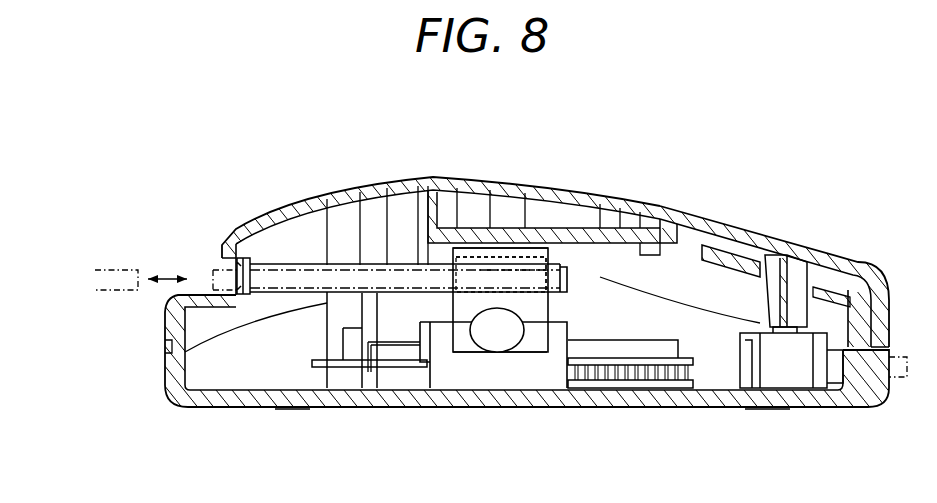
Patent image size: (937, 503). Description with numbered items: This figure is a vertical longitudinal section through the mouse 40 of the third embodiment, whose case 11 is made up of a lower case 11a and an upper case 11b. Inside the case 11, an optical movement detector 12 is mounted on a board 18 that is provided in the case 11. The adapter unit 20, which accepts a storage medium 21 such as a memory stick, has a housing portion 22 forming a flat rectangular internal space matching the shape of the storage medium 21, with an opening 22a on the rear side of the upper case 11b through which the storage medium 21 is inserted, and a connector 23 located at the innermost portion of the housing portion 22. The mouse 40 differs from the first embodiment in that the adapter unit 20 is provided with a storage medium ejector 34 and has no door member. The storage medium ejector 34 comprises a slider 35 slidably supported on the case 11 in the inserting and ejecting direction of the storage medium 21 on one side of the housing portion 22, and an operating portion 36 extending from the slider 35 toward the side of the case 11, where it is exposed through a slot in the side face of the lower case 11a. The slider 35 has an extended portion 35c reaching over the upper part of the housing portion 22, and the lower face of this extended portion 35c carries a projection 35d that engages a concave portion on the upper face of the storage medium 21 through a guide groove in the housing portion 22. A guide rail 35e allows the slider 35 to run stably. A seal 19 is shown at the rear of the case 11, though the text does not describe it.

The case 11 is at (712, 217).
The lower case 11a is at (222, 407).
The upper case 11b is at (360, 183).
The optical movement detector 12 is at (602, 334).
The board 18 is at (686, 378).
The seal 19 is at (893, 380).
The adapter unit 20 is at (284, 252).
The storage medium 21 is at (110, 268).
The housing portion 22 is at (263, 293).
The opening 22a is at (215, 277).
The connector 23 is at (567, 260).
The storage medium ejector 34 is at (403, 378).
The slider 35 is at (545, 307).
The extended portion 35c is at (468, 262).
The projection 35d is at (515, 262).
The guide rail 35e is at (472, 378).
The operating portion 36 is at (503, 343).
The mouse 40 is at (699, 181).